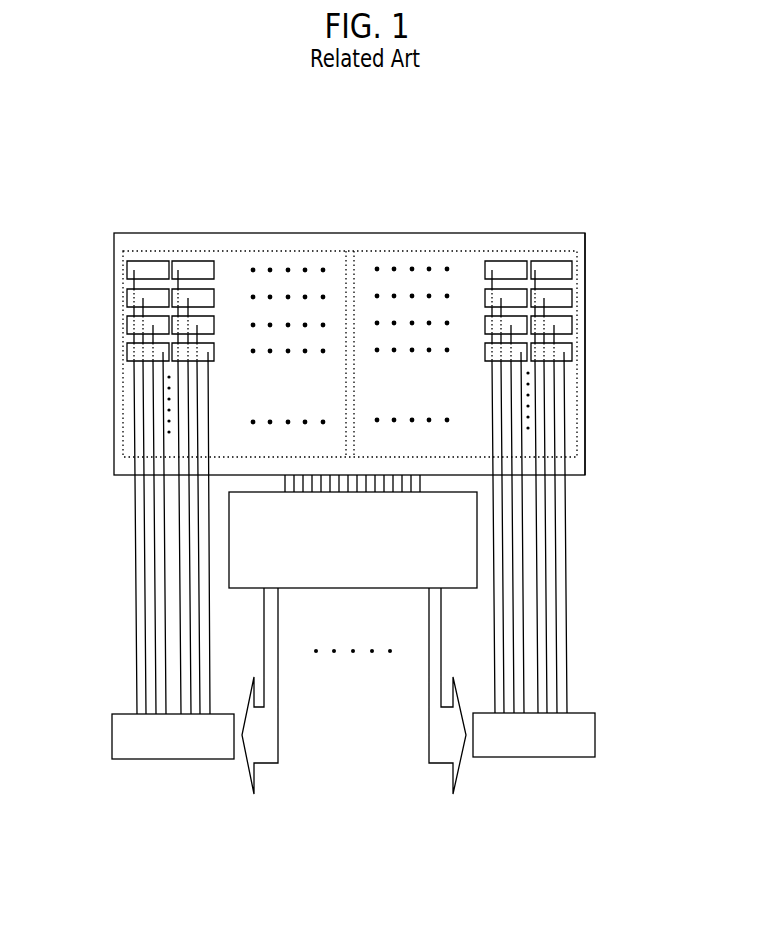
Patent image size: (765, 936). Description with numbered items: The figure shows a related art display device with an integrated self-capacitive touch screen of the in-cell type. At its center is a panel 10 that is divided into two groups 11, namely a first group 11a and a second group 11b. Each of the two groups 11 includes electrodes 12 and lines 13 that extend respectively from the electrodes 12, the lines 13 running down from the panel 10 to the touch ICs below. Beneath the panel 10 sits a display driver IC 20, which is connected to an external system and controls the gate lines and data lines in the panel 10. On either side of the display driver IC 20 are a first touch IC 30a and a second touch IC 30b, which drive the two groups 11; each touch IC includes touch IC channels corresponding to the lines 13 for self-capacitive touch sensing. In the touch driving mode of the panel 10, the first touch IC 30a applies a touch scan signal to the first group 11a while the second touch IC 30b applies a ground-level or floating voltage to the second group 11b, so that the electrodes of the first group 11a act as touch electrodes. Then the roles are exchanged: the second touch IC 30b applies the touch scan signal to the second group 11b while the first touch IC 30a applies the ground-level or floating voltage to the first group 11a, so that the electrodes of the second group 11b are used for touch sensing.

The panel 10 is at (586, 298).
The two groups 11 is at (673, 227).
The first group 11a is at (328, 252).
The second group 11b is at (575, 261).
The electrodes 12 is at (565, 345).
The lines 13 is at (565, 403).
The display driver IC 20 is at (478, 537).
The first touch IC 30a is at (112, 740).
The second touch IC 30b is at (595, 733).